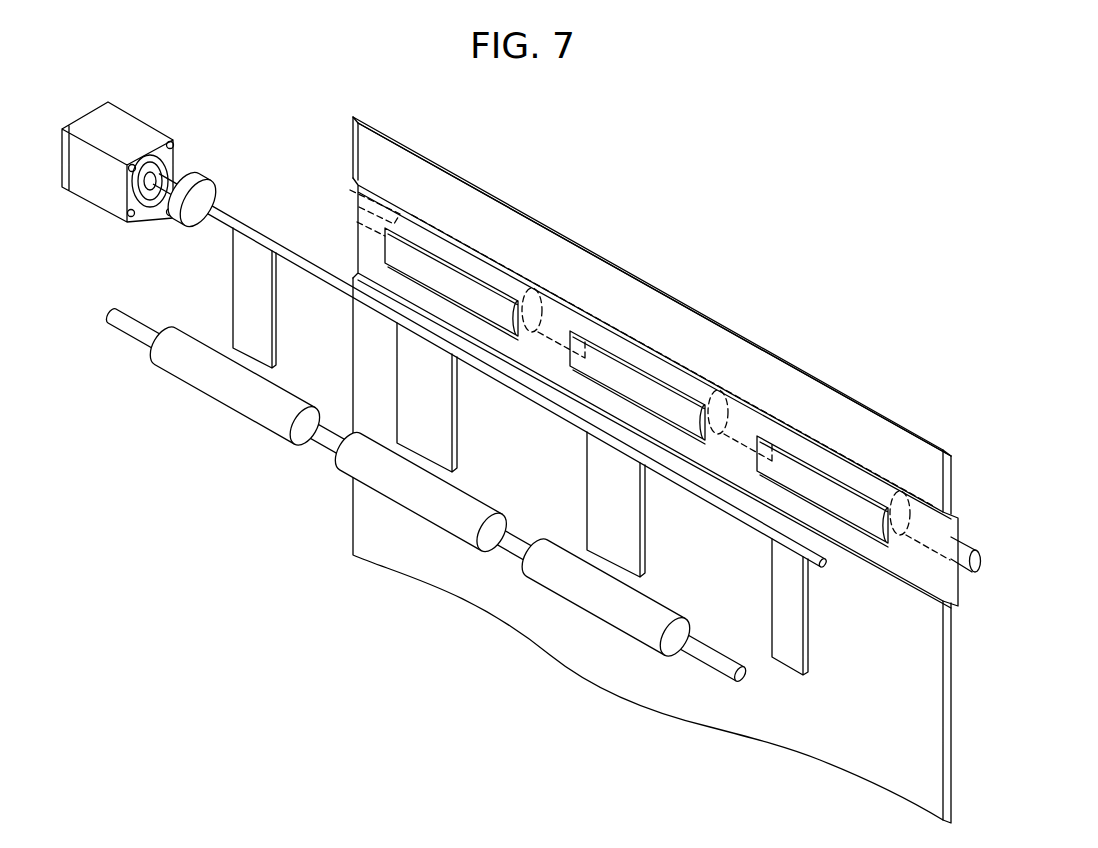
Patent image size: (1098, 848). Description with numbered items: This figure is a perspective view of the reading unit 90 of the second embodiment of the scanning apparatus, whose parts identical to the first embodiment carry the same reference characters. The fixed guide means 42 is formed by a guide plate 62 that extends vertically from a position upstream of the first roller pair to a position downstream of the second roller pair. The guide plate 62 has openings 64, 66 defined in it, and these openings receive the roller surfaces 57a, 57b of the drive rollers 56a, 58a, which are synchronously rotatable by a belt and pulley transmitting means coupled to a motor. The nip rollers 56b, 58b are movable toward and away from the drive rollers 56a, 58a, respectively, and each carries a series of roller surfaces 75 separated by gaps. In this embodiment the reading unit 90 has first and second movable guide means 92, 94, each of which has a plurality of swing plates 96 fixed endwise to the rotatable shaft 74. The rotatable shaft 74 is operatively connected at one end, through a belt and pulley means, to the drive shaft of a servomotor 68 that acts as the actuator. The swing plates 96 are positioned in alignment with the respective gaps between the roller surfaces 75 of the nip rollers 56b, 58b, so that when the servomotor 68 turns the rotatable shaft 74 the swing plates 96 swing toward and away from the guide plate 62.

The fixed guide means 42 is at (658, 287).
The drive roller 56a is at (1021, 519).
The nip roller 56b is at (411, 495).
The roller surface 57a is at (636, 387).
The roller surface 57b is at (807, 478).
The drive roller 58a is at (971, 548).
The nip roller 58b is at (411, 495).
The guide plate 62 is at (780, 370).
The opening 64 is at (654, 402).
The opening 66 is at (862, 542).
The servomotor 68 is at (138, 140).
The rotatable shaft 74 is at (245, 216).
The roller surface 75 is at (628, 637).
The reading unit 90 is at (684, 158).
The first movable guide means 92 is at (248, 116).
The second movable guide means 94 is at (250, 152).
The swing plate 96 is at (240, 293).